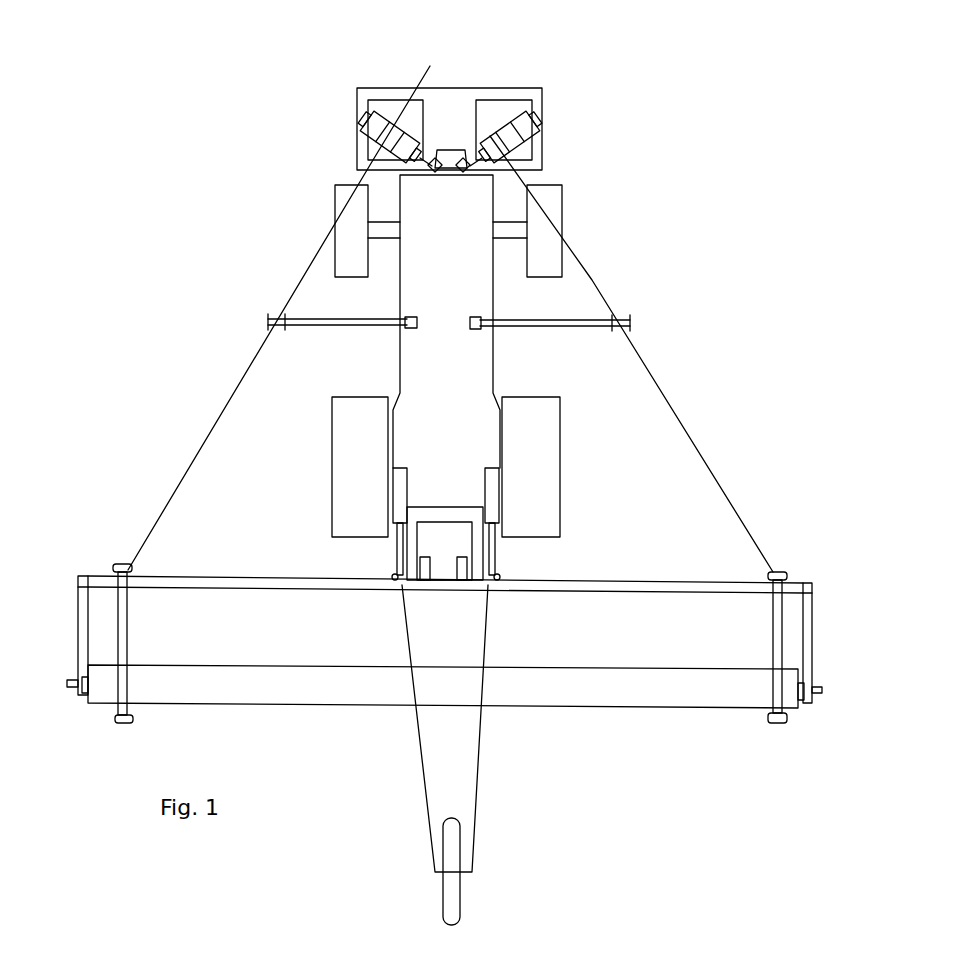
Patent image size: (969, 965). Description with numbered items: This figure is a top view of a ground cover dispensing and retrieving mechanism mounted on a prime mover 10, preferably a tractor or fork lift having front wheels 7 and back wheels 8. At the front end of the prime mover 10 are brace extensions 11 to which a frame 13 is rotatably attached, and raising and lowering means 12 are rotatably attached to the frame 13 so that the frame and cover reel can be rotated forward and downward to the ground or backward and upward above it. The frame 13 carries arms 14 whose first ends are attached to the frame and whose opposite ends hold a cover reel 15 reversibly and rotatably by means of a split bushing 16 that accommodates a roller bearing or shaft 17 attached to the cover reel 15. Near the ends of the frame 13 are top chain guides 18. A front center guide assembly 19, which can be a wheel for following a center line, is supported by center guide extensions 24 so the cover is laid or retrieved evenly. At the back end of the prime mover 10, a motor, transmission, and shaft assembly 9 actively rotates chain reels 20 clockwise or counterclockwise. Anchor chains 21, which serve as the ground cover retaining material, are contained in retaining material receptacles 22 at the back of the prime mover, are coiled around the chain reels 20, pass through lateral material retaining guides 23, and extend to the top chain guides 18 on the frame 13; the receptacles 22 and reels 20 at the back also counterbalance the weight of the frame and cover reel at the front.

The front wheels 7 is at (547, 505).
The back wheels 8 is at (555, 197).
The motor, transmission, and shaft assembly 9 is at (450, 150).
The prime mover 10 is at (507, 377).
The brace extensions 11 is at (497, 560).
The raising and lowering means 12 is at (485, 487).
The frame 13 is at (633, 580).
The arms 14 is at (78, 622).
The cover reel 15 is at (613, 673).
The split bushing 16 is at (80, 676).
The roller bearing (or shaft) 17 is at (67, 685).
The top chain guides 18 is at (127, 628).
The front center guide assembly 19 is at (467, 888).
The chain reels 20 is at (373, 117).
The anchor chains 21 is at (610, 262).
The retaining material receptacles 22 is at (396, 107).
The lateral material retaining guides 23 is at (318, 327).
The center guide extensions 24 is at (478, 768).